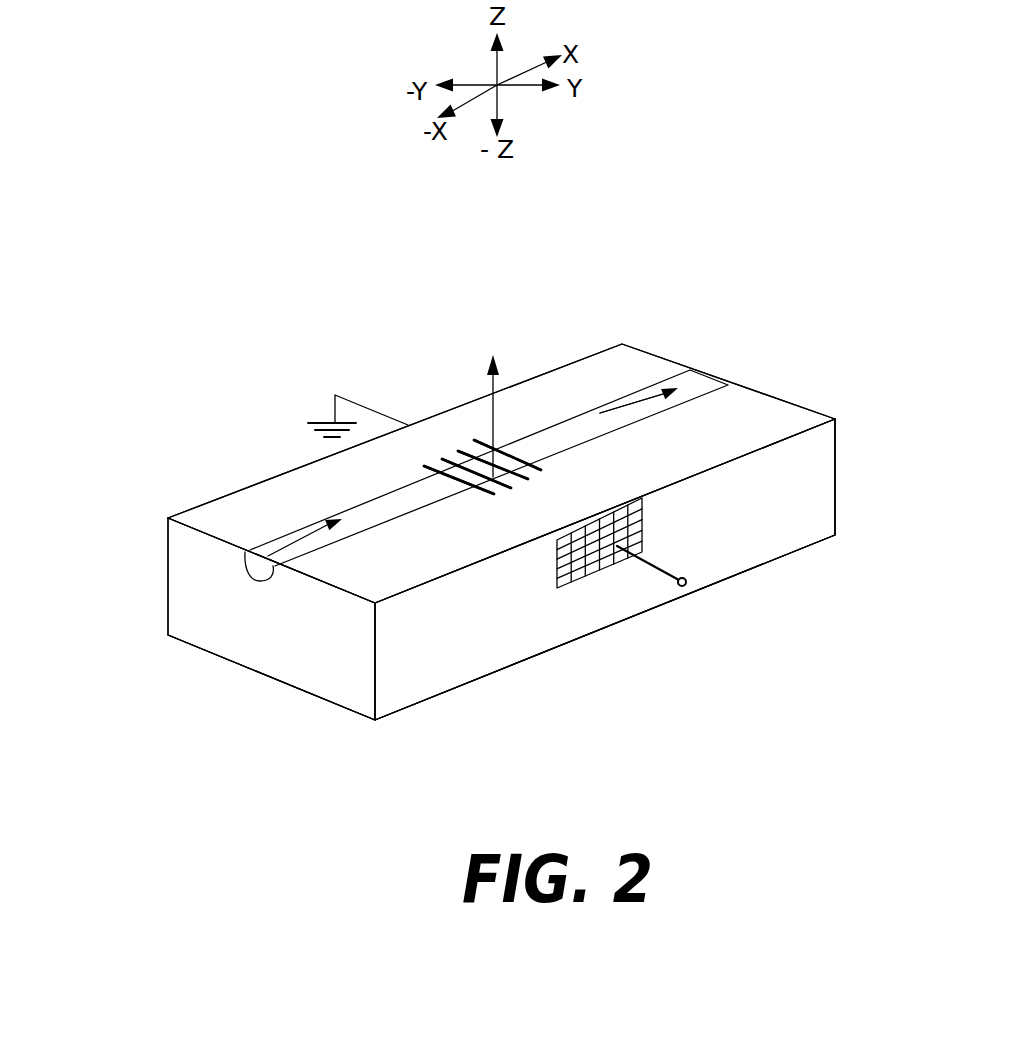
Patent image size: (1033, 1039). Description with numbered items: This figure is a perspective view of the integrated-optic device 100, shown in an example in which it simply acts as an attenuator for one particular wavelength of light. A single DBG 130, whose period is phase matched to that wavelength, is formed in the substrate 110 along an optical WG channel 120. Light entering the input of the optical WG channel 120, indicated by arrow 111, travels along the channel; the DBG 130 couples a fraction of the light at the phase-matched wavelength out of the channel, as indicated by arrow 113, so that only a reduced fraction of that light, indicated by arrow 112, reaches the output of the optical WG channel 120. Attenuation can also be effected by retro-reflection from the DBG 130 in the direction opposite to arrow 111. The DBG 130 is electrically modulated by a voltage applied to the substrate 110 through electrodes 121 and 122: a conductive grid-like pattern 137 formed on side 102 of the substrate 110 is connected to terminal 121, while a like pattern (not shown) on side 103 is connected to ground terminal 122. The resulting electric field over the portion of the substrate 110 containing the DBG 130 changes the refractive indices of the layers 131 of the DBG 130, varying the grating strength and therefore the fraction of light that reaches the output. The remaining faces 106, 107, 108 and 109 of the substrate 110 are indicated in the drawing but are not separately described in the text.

The integrated-optic device 100 is at (751, 155).
The side of the substrate 102 is at (415, 696).
The side of the substrate 103 is at (205, 615).
The bottom face 106 is at (330, 701).
The right end face 107 is at (802, 470).
The top surface 108 is at (294, 472).
The front face 109 is at (524, 646).
The substrate 110 is at (178, 501).
The arrow 111 is at (271, 533).
The arrow 112 is at (649, 382).
The arrow 113 is at (505, 366).
The optical WG channel 120 is at (230, 571).
The electrode 121 is at (648, 568).
The ground terminal 122 is at (336, 395).
The DBG 130 is at (553, 470).
The layers of the DBG 131 is at (486, 431).
The conductive grid-like pattern 137 is at (645, 529).